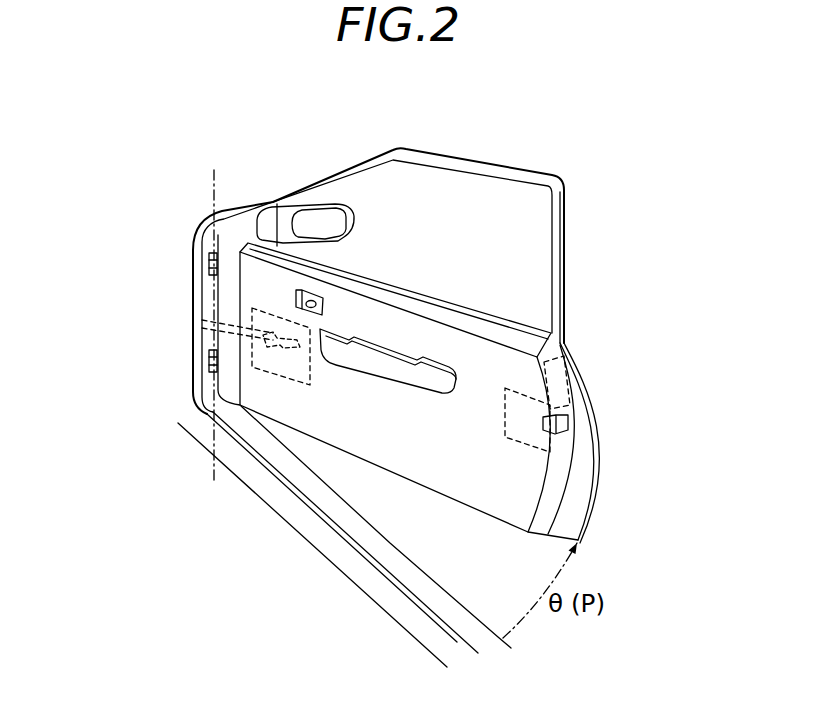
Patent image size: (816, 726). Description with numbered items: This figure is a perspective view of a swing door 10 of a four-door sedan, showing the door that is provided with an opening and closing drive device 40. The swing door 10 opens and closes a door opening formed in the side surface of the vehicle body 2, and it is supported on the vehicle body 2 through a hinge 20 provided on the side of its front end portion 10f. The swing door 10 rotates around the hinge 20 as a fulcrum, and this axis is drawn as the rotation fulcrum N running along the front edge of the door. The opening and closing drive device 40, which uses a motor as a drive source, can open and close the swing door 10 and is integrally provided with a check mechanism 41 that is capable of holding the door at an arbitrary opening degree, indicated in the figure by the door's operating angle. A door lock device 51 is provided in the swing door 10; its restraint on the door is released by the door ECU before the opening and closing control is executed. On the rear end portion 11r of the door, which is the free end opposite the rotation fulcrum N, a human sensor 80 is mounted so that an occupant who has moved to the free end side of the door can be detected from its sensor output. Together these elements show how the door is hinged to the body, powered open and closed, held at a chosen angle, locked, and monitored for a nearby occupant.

The swing door 10 is at (555, 177).
The front end portion 10f is at (215, 297).
The rear end portion 11r is at (562, 468).
The hinge 20 is at (210, 262).
The rotation fulcrum N is at (213, 186).
The opening and closing drive device 40 is at (310, 385).
The check mechanism 41 is at (276, 330).
The door lock device 51 is at (505, 388).
The human sensor 80 is at (570, 380).
The vehicle body 2 is at (389, 543).